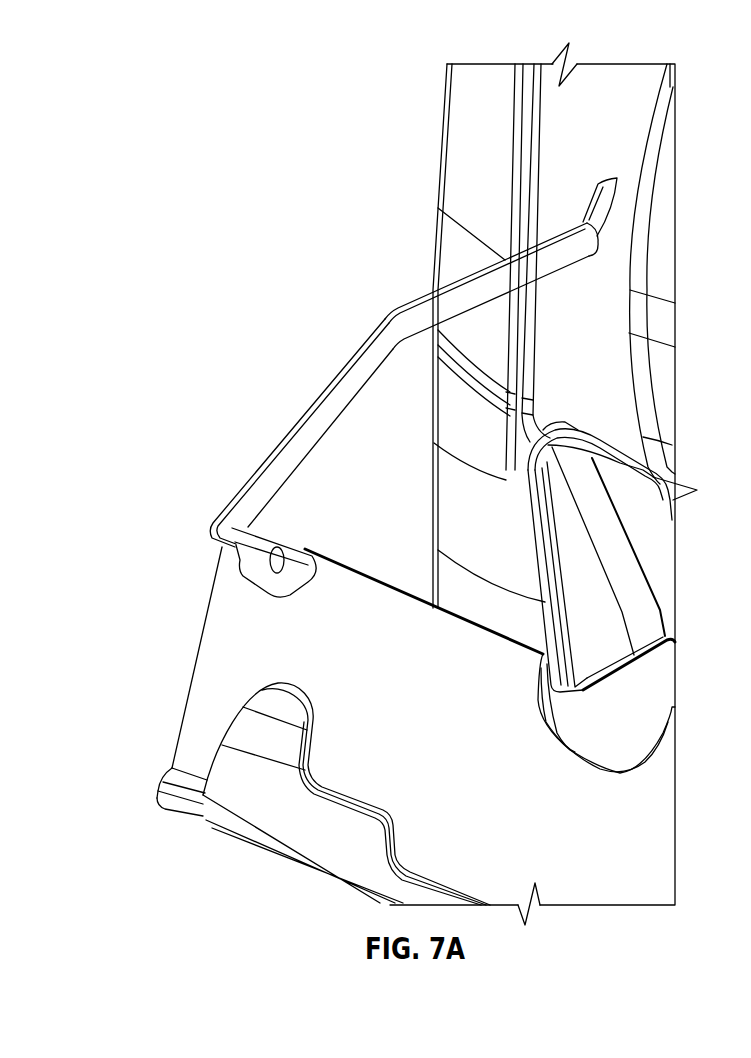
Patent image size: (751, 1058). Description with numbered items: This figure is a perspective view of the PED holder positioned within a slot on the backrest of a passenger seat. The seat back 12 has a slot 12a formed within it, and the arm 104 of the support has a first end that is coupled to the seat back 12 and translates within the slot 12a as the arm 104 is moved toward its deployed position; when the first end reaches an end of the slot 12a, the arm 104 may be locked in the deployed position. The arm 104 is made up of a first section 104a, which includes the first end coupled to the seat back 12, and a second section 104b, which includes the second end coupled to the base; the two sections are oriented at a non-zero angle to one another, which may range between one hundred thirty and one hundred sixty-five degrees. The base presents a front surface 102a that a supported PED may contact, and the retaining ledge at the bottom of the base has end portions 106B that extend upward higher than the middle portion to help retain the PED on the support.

The seat back 12 is at (543, 148).
The slot 12a is at (617, 190).
The arm 104 is at (379, 410).
The first section 104a is at (442, 287).
The second section 104b is at (300, 448).
The front surface 102a is at (280, 637).
The end portions 106B is at (245, 798).